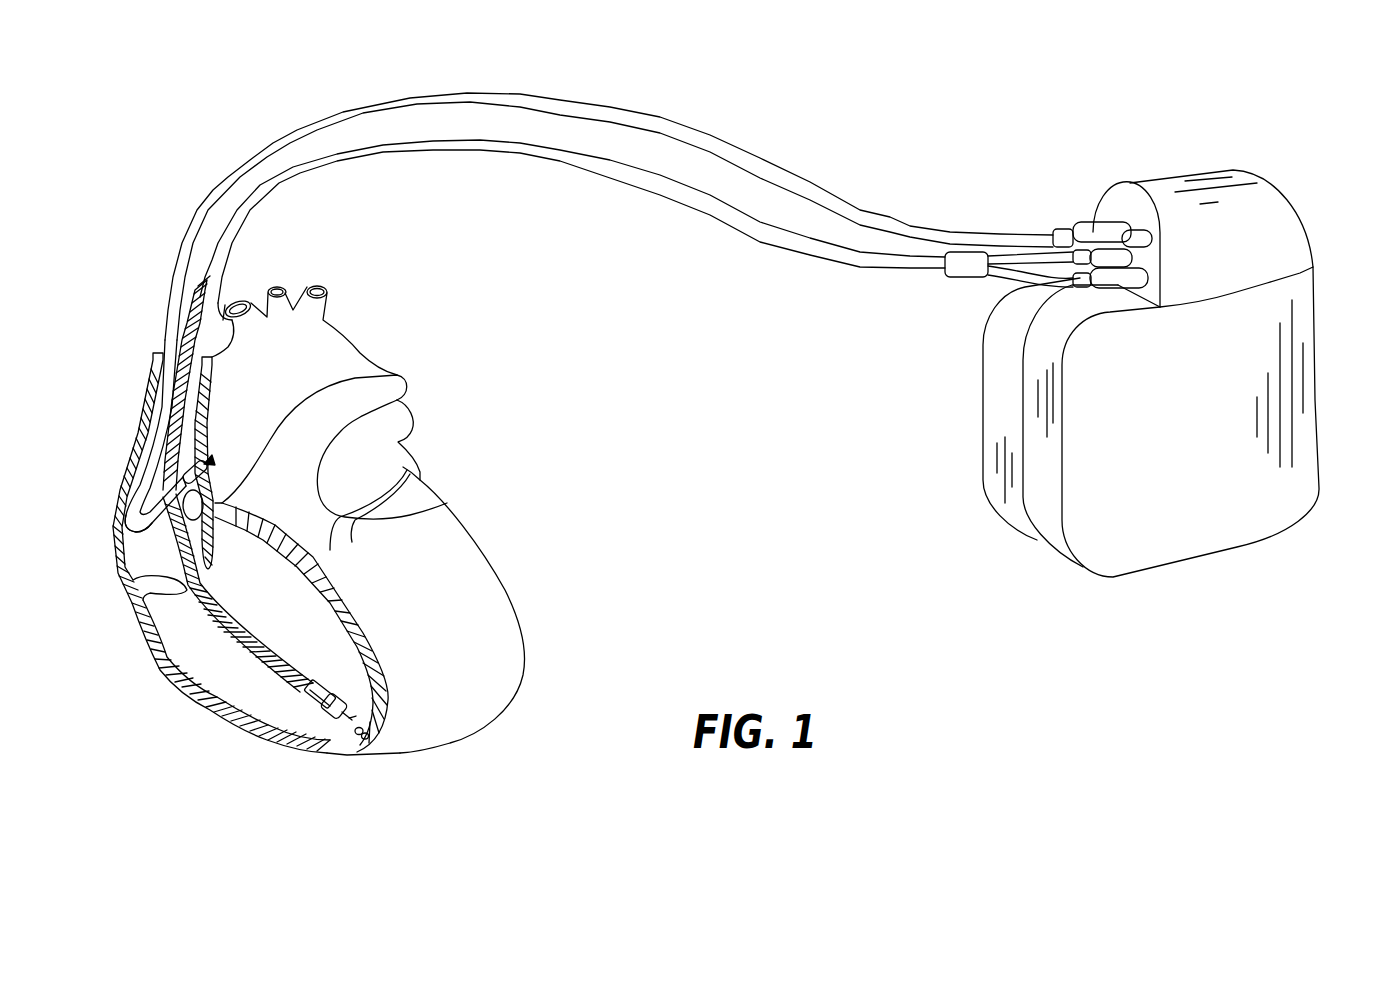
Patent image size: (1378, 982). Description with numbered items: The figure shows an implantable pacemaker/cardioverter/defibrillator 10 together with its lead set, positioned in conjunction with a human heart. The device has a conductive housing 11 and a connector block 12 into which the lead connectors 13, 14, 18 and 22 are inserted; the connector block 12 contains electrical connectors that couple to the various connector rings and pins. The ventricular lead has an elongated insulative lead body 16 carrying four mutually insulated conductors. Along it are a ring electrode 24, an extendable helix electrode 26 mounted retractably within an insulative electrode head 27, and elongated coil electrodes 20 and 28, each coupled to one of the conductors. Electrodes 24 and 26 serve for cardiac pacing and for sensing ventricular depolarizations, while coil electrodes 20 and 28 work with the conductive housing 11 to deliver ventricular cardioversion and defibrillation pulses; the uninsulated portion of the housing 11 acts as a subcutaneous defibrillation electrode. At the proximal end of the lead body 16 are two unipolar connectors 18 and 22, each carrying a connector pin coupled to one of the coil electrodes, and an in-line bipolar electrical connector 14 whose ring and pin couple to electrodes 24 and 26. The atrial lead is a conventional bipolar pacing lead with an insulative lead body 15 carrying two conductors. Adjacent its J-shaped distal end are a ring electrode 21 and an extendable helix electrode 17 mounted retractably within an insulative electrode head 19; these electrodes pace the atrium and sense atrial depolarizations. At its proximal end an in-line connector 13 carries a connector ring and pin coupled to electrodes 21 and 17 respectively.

The pacemaker/cardioverter/defibrillator 10 is at (1322, 458).
The conductive housing 11 is at (1117, 530).
The connector block 12 is at (1217, 175).
The in-line connector 13 is at (1087, 230).
The electrical connector 14 is at (988, 282).
The lead body 15 is at (870, 215).
The lead body 16 is at (877, 260).
The extendable helix electrode 17 is at (212, 462).
The unipolar connector 18 is at (1125, 240).
The insulative electrode head 19 is at (190, 471).
The elongated coil electrode 20 is at (233, 640).
The ring electrode 21 is at (158, 504).
The unipolar connector 22 is at (1160, 250).
The ring electrode 24 is at (313, 700).
The extendable helix electrode 26 is at (367, 738).
The insulative electrode head 27 is at (348, 713).
The elongated coil electrode 28 is at (221, 295).